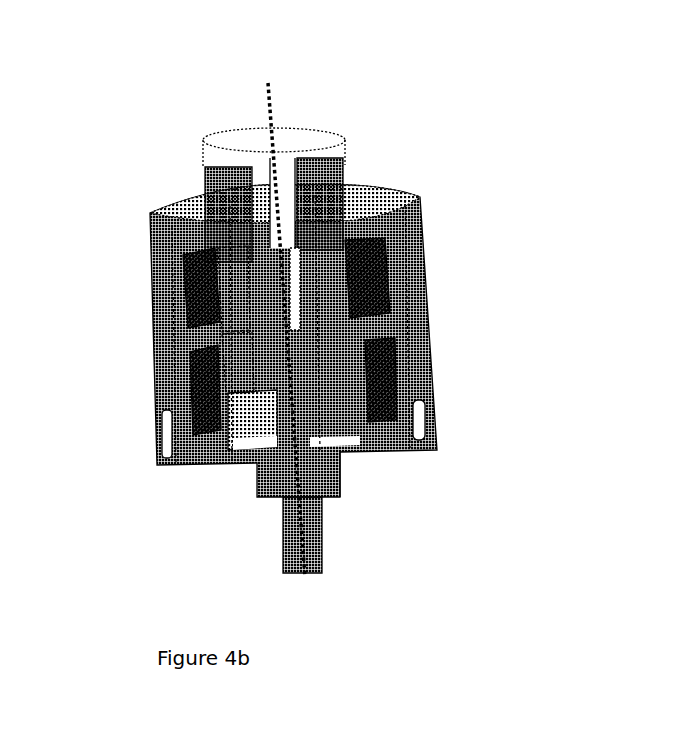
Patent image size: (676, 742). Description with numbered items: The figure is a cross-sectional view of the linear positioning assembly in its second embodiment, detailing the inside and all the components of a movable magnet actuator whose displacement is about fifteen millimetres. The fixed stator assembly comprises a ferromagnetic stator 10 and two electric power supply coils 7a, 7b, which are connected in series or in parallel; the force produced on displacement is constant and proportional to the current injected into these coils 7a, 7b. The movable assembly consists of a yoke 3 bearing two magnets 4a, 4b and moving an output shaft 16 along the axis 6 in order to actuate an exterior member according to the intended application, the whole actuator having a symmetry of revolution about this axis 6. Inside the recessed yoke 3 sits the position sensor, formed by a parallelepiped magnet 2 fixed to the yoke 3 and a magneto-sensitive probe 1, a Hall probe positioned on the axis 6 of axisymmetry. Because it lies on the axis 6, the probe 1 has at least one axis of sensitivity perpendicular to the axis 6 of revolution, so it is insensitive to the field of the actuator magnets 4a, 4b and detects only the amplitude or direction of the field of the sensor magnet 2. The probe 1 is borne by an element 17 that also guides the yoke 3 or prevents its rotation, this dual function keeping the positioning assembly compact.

The magneto-sensitive probe 1 is at (296, 302).
The parallelepiped magnet 2 is at (272, 273).
The yoke 3 is at (234, 239).
The magnet 4a is at (214, 252).
The magnet 4b is at (220, 327).
The axis 6 is at (284, 93).
The electric power supply coil 7a is at (183, 288).
The electric power supply coil 7b is at (190, 386).
The ferromagnetic stator 10 is at (406, 326).
The output shaft 16 is at (294, 524).
The guiding element 17 is at (253, 151).